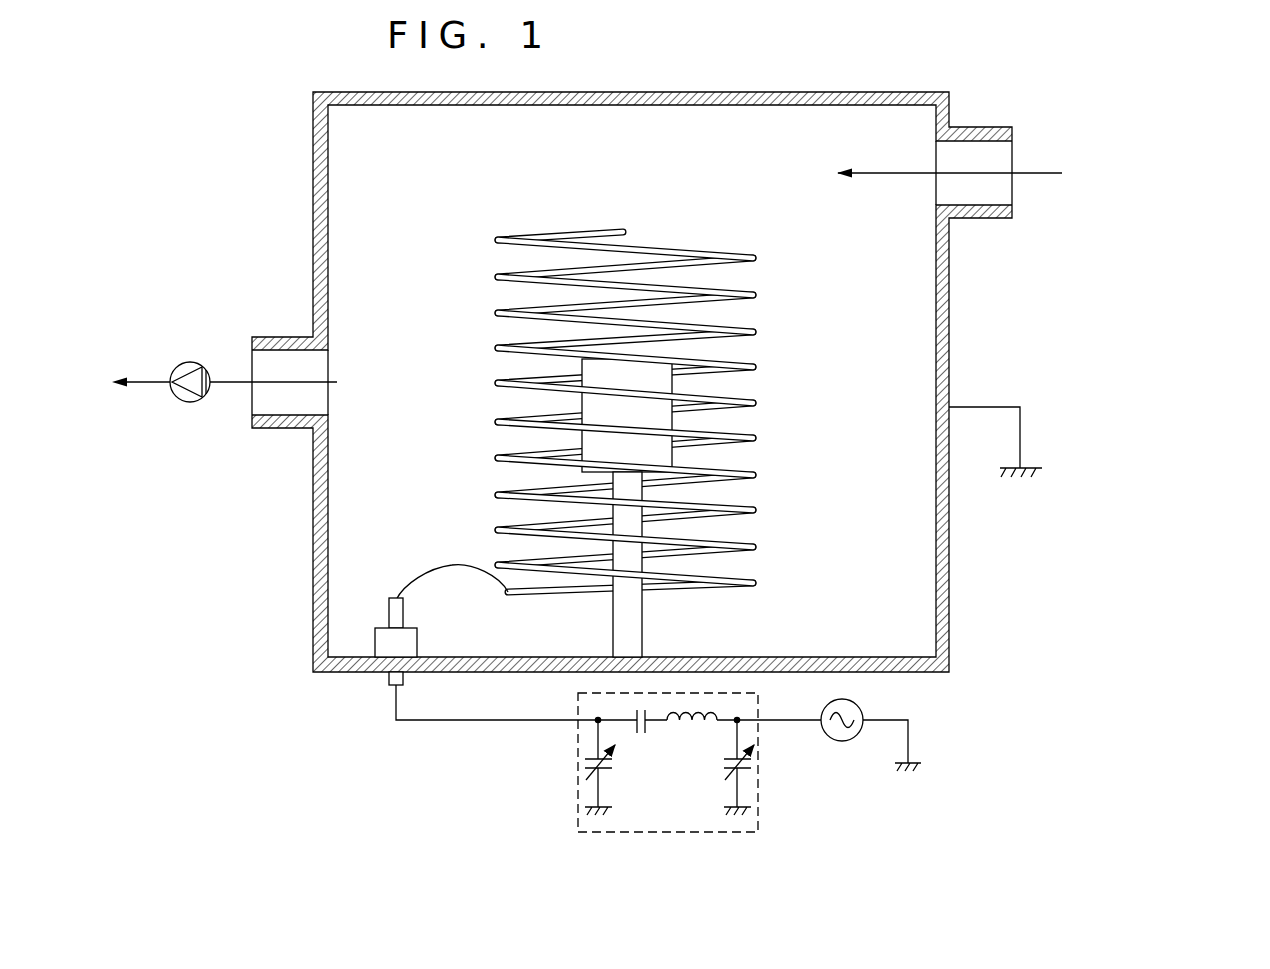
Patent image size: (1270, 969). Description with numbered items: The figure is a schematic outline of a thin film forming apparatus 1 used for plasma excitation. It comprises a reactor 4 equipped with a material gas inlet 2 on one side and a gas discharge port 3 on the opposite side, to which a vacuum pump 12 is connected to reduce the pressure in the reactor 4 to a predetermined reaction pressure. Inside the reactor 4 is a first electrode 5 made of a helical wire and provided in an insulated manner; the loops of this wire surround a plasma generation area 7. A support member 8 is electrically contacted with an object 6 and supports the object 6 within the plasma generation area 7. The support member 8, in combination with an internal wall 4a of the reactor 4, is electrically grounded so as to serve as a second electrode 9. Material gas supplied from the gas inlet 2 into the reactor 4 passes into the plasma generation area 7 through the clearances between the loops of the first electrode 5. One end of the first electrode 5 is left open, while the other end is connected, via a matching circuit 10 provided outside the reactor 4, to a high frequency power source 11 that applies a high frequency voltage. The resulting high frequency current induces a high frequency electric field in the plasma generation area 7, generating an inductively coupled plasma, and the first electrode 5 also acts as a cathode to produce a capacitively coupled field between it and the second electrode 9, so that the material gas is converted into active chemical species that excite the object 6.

The thin film forming apparatus 1 is at (234, 226).
The material gas inlet 2 is at (980, 220).
The gas discharge port 3 is at (293, 430).
The reactor 4 is at (313, 150).
The internal wall 4a is at (619, 382).
The first electrode 5 is at (623, 405).
The object 6 is at (673, 382).
The plasma generation area 7 is at (623, 405).
The support member 8 is at (645, 632).
The second electrode 9 is at (716, 376).
The matching circuit 10 is at (578, 760).
The high frequency power source 11 is at (842, 743).
The vacuum pump 12 is at (190, 362).